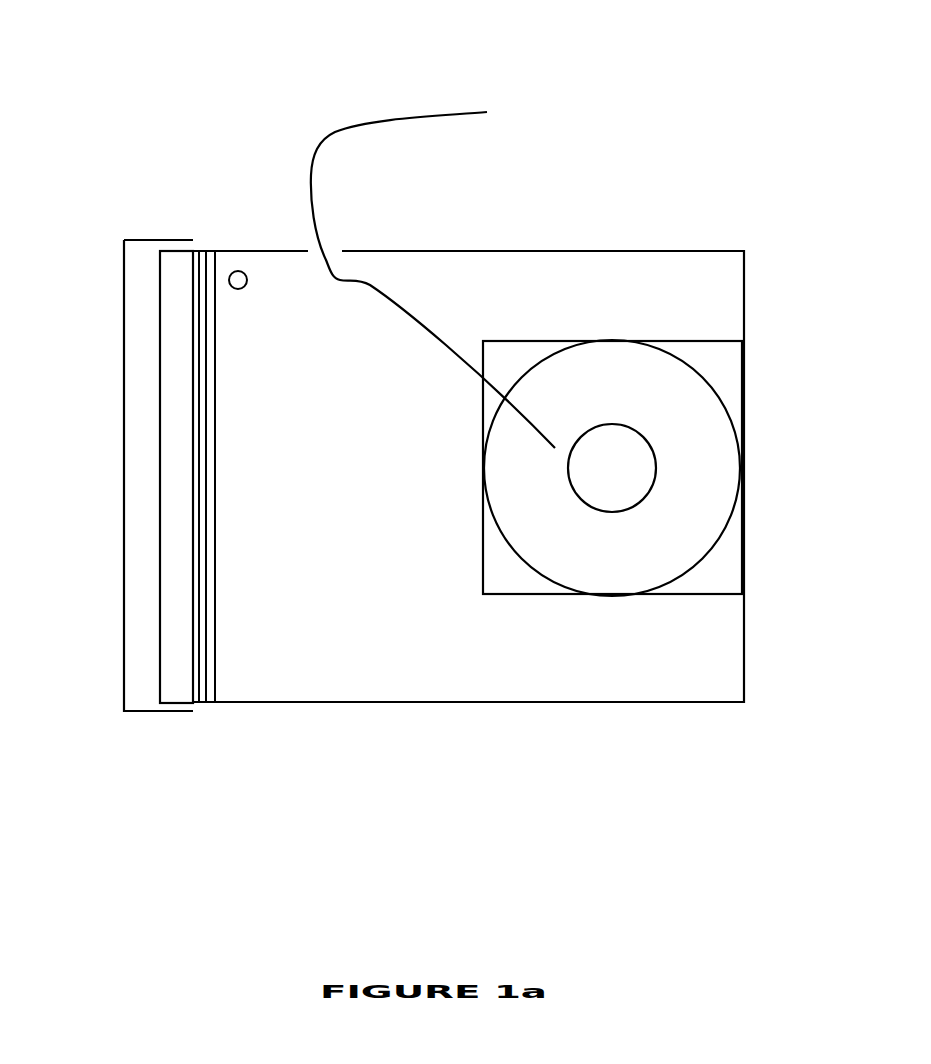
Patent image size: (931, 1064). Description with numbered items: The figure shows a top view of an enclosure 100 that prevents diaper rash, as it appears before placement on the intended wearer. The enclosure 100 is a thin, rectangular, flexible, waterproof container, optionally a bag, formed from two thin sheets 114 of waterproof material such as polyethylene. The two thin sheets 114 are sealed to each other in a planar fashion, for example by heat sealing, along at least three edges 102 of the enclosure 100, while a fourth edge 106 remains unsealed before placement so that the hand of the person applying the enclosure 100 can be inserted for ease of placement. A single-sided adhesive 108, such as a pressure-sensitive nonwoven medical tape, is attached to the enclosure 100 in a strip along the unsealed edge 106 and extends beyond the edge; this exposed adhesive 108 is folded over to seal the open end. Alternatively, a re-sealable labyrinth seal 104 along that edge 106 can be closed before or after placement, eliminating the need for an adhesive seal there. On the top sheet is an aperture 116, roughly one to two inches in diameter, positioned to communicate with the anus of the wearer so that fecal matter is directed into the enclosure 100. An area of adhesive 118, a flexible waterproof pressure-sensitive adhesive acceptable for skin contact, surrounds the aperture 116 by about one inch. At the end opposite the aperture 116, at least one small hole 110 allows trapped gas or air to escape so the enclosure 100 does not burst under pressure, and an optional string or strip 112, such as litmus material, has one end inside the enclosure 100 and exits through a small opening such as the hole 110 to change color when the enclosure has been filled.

The enclosure 100 is at (778, 90).
The edges 102 is at (728, 647).
The re-sealable labyrinth seal 104 is at (193, 699).
The fourth edge 106 is at (144, 317).
The single-sided adhesive 108 is at (112, 418).
The hole 110 is at (278, 224).
The string or strip 112 is at (479, 88).
The thin sheets 114 is at (572, 288).
The aperture 116 is at (636, 468).
The adhesive 118 is at (701, 527).